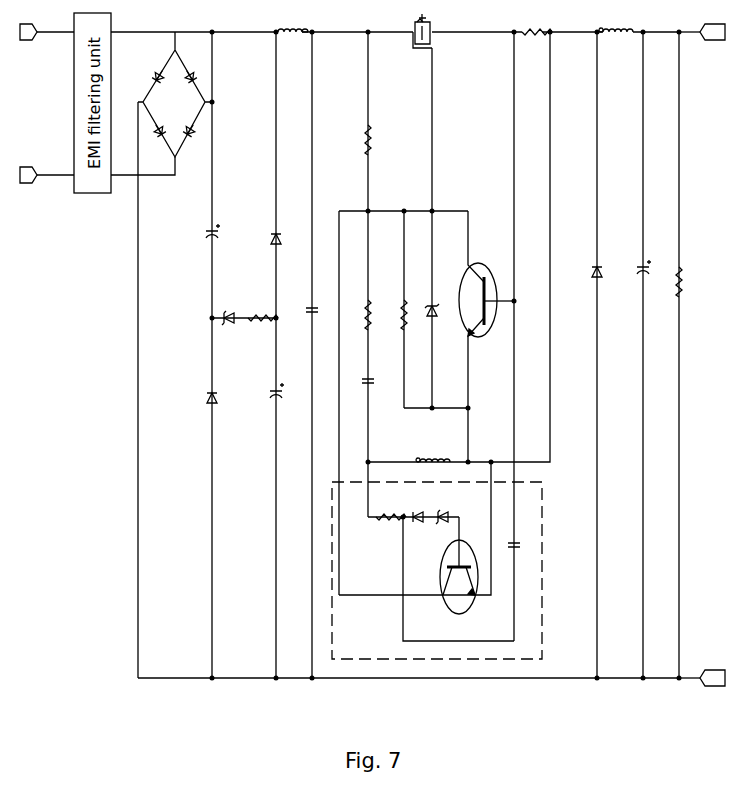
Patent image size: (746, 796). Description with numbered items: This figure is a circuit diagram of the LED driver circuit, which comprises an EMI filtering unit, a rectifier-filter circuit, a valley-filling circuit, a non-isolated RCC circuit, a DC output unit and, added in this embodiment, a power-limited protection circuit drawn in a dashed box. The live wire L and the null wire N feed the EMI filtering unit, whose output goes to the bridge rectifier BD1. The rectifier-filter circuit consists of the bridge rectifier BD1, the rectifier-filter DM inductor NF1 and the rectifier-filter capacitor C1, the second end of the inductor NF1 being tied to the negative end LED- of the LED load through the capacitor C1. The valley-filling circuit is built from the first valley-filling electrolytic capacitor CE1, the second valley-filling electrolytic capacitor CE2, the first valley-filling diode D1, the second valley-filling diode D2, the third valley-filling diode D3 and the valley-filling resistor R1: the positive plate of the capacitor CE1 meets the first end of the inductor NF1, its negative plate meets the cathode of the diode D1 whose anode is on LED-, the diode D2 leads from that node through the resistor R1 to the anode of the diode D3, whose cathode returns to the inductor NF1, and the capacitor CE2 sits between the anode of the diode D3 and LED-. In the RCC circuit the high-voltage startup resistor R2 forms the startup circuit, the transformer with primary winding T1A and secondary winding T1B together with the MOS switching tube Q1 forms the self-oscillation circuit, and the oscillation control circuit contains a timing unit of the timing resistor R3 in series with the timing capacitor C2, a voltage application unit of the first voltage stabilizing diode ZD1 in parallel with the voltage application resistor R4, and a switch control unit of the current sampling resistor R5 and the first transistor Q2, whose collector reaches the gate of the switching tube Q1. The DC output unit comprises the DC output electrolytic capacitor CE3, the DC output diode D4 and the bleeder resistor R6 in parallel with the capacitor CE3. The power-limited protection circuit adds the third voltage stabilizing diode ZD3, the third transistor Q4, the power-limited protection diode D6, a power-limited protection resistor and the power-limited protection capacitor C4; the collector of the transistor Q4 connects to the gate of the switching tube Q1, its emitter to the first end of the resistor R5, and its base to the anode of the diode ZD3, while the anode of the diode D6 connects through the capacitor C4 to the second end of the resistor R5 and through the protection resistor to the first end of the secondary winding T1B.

The live wire L is at (47, 32).
The null wire N is at (47, 175).
The bridge rectifier BD1 is at (175, 98).
The rectifier-filter DM inductor NF1 is at (293, 39).
The first valley-filling electrolytic capacitor CE1 is at (202, 232).
The second valley-filling diode D2 is at (270, 238).
The rectifier-filter capacitor C1 is at (306, 307).
The third valley-filling diode D3 is at (227, 330).
The valley-filling resistor R1 is at (263, 332).
The first valley-filling diode D1 is at (205, 398).
The second valley-filling electrolytic capacitor CE2 is at (266, 392).
The high-voltage startup resistor R2 is at (361, 140).
The switching tube Q1 is at (422, 41).
The timing resistor R3 is at (452, 179).
The primary winding T1A is at (616, 40).
The voltage application resistor R4 is at (397, 315).
The first voltage stabilizing diode ZD1 is at (425, 318).
The timing capacitor C2 is at (359, 380).
The first transistor Q2 is at (486, 336).
The DC output diode D4 is at (590, 272).
The DC output electrolytic capacitor CE3 is at (634, 267).
The bleeder resistor R6 is at (685, 282).
The secondary winding T1B is at (433, 448).
The current sampling resistor R5 is at (391, 532).
The power-limited protection diode D6 is at (416, 531).
The third voltage stabilizing diode ZD3 is at (438, 530).
The third transistor Q4 is at (460, 565).
The power-limited protection capacitor C4 is at (520, 545).
The negative end of the LED load LED- is at (702, 678).